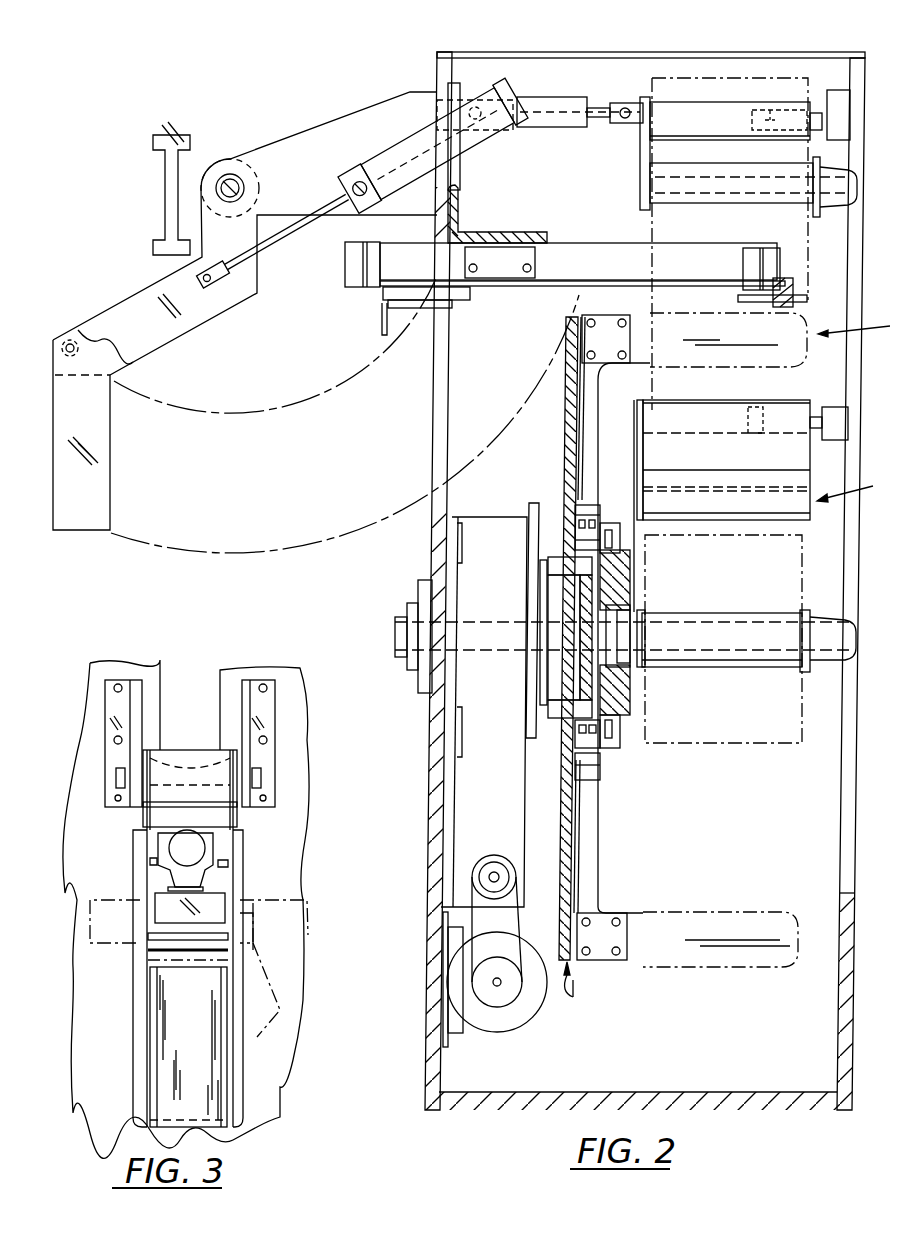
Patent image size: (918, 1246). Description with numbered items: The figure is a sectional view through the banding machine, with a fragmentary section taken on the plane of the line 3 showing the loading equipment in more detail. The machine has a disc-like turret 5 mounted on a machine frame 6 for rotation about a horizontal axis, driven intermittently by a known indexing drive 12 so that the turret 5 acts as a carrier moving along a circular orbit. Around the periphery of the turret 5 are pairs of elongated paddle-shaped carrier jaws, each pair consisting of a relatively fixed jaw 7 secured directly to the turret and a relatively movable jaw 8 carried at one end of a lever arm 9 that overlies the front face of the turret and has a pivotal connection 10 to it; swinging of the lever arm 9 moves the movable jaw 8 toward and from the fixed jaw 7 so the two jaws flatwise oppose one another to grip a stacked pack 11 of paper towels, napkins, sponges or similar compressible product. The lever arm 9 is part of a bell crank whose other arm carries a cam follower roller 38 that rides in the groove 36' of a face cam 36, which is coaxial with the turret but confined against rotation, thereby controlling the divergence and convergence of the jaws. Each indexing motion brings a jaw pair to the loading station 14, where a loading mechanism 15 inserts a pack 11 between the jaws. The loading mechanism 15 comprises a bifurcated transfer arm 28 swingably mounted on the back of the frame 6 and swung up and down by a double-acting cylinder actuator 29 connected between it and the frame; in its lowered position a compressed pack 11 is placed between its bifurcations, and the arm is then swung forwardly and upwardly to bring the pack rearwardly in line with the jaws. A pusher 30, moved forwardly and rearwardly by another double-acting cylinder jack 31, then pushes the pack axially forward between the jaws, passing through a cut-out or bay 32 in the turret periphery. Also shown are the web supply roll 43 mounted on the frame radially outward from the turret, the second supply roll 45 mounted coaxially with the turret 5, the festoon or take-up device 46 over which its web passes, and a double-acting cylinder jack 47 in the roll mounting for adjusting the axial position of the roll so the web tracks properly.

In FIG. 2, the section plane line 3— 3 is at (47, 53).
In FIG. 2, the turret 5 is at (573, 989).
In FIG. 3, the turret 5 is at (85, 907).
In FIG. 2, the machine frame 6 is at (430, 717).
In FIG. 3, the fixed jaw 7 is at (130, 940).
In FIG. 2, the movable jaw 8 is at (805, 351).
In FIG. 3, the movable jaw 8 is at (240, 920).
In FIG. 2, the lever arm 9 is at (598, 415).
In FIG. 3, the lever arm 9 is at (280, 973).
In FIG. 2, the pivotal connection 10 is at (605, 770).
In FIG. 2, the pack 11 is at (60, 358).
In FIG. 3, the pack 11 is at (178, 1072).
In FIG. 2, the indexing drive 12 is at (497, 523).
In FIG. 2, the loading station 14 is at (867, 325).
In FIG. 2, the loading mechanism 15 is at (258, 132).
In FIG. 3, the loading mechanism 15 is at (108, 821).
In FIG. 2, the transfer arm 28 is at (53, 392).
In FIG. 3, the transfer arm 28 is at (237, 1062).
In FIG. 2, the cylinder actuator 29 is at (416, 138).
In FIG. 2, the pusher 30 is at (380, 316).
In FIG. 3, the pusher 30 is at (216, 900).
In FIG. 2, the cylinder jack 31 is at (600, 247).
In FIG. 3, the cylinder jack 31 is at (198, 850).
In FIG. 2, the bay 32 is at (567, 367).
In FIG. 3, the bay 32 is at (150, 960).
In FIG. 2, the face cam 36 is at (622, 756).
In FIG. 2, the groove 36' is at (640, 741).
In FIG. 2, the cam follower roller 38 is at (607, 535).
In FIG. 2, the supply roll 43 is at (712, 75).
In FIG. 2, the supply roll 45 is at (802, 553).
In FIG. 2, the take-up device 46 is at (769, 460).
In FIG. 2, the cylinder jack 47 is at (577, 72).